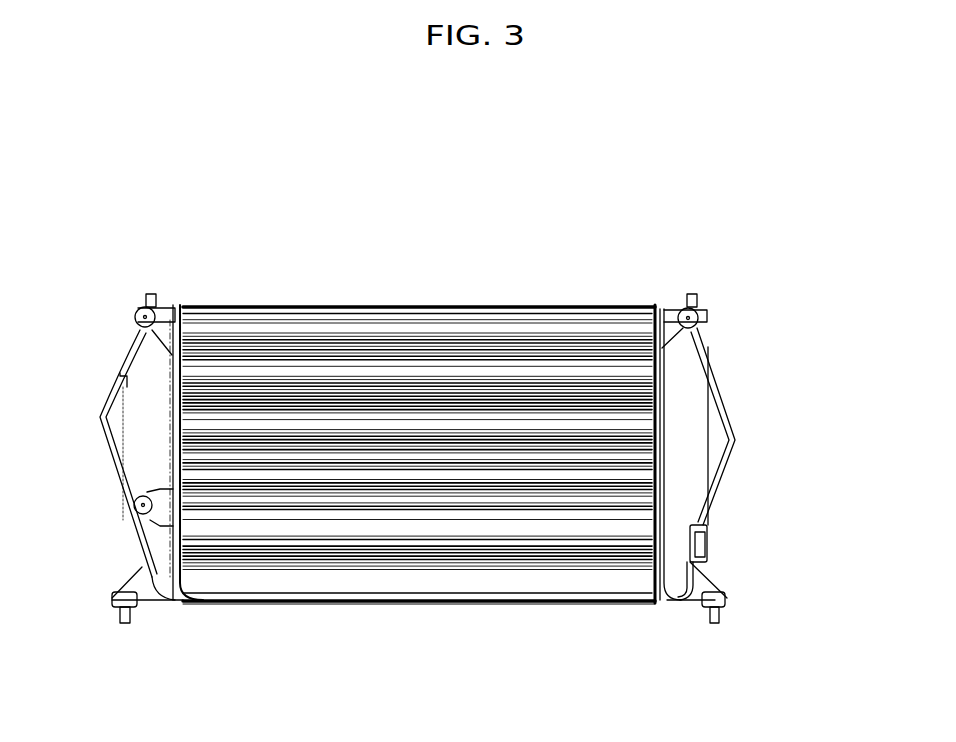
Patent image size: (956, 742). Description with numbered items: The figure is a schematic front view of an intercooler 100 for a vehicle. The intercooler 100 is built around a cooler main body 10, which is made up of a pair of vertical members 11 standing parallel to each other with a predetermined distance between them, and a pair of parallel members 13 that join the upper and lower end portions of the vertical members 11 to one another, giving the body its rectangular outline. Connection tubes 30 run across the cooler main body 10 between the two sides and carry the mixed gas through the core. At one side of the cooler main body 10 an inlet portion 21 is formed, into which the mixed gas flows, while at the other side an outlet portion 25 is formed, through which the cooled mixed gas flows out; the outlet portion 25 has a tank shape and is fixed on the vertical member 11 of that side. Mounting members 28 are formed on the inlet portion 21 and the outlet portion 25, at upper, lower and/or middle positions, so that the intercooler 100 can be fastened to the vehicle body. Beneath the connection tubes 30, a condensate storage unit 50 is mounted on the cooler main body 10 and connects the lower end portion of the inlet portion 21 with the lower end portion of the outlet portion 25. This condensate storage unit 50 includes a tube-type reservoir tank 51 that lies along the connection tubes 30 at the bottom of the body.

The intercooler 100 is at (438, 186).
The cooler main body 10 is at (662, 292).
The vertical members 11 is at (646, 330).
The parallel members 13 is at (472, 306).
The connection tubes 30 is at (227, 318).
The inlet portion 21 is at (103, 463).
The outlet portion 25 is at (763, 434).
The mounting members 28 is at (134, 320).
The condensate storage unit 50 is at (385, 614).
The reservoir tank 51 is at (320, 588).